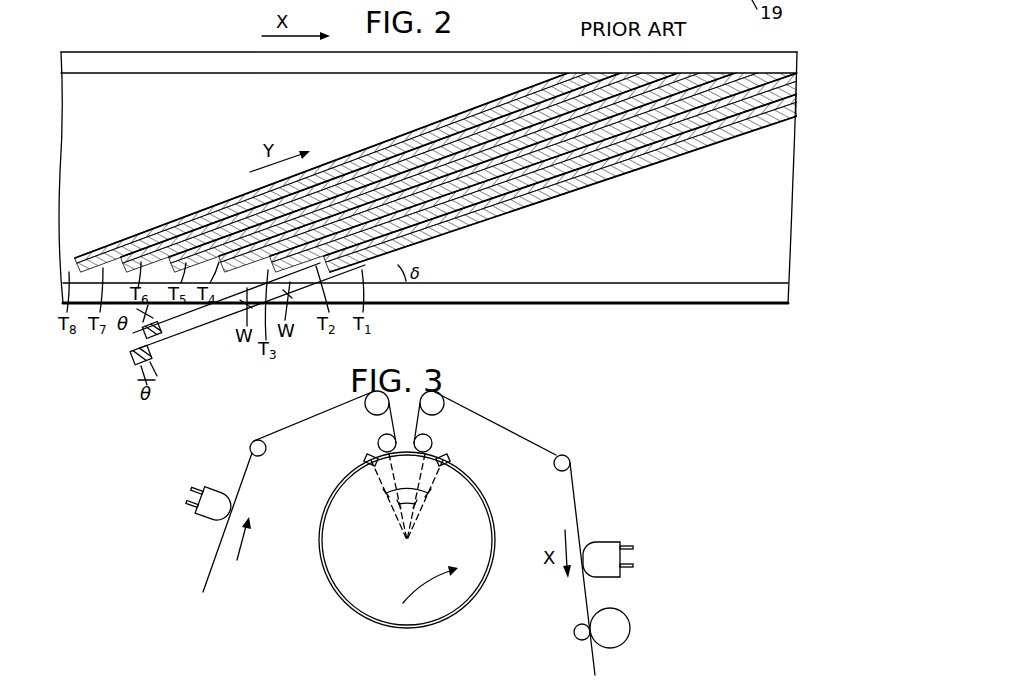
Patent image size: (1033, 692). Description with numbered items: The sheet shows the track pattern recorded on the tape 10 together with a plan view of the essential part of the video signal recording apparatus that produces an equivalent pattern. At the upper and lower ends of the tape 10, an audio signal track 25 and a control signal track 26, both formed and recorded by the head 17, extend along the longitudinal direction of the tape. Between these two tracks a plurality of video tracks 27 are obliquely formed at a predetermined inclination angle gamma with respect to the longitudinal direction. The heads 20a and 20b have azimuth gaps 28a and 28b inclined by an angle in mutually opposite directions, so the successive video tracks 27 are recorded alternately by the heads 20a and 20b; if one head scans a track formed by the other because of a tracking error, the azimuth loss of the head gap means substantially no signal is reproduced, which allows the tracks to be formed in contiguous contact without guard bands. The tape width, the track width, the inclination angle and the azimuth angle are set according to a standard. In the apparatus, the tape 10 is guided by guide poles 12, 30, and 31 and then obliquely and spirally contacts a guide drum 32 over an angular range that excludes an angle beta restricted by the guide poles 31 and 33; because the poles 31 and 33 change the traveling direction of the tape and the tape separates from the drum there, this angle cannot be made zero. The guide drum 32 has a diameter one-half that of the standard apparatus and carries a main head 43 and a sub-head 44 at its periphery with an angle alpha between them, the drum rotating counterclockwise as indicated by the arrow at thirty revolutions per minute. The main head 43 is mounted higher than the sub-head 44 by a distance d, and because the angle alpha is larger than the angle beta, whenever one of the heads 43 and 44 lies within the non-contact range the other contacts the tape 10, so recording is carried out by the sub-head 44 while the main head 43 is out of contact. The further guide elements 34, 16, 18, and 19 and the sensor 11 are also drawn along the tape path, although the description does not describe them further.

In FIG. 2, the tape 10 is at (155, 80).
In FIG. 3, the tape 10 is at (295, 425).
In FIG. 2, the audio signal track 25 is at (546, 52).
In FIG. 2, the control signal track 26 is at (635, 298).
In FIG. 2, the video tracks 27 is at (346, 146).
In FIG. 2, the head 20a is at (130, 351).
In FIG. 2, the head 20b is at (160, 338).
In FIG. 2, the azimuth gap 28a is at (131, 360).
In FIG. 2, the azimuth gap 28b is at (150, 366).
In FIG. 3, the first sensor 11 is at (217, 490).
In FIG. 3, the guide pole 12 is at (265, 456).
In FIG. 3, the guide pole 30 is at (367, 414).
In FIG. 3, the guide pole 31 is at (378, 444).
In FIG. 3, the guide drum 32 is at (352, 590).
In FIG. 3, the guide pole 33 is at (433, 443).
In FIG. 3, the guide roller 34 is at (443, 413).
In FIG. 3, the main head 43 is at (443, 478).
In FIG. 3, the sub-head 44 is at (367, 478).
In FIG. 3, the guide roller 16 is at (555, 469).
In FIG. 3, the head 17 is at (604, 545).
In FIG. 3, the pinch roller 18 is at (575, 628).
In FIG. 3, the capstan 19 is at (622, 621).